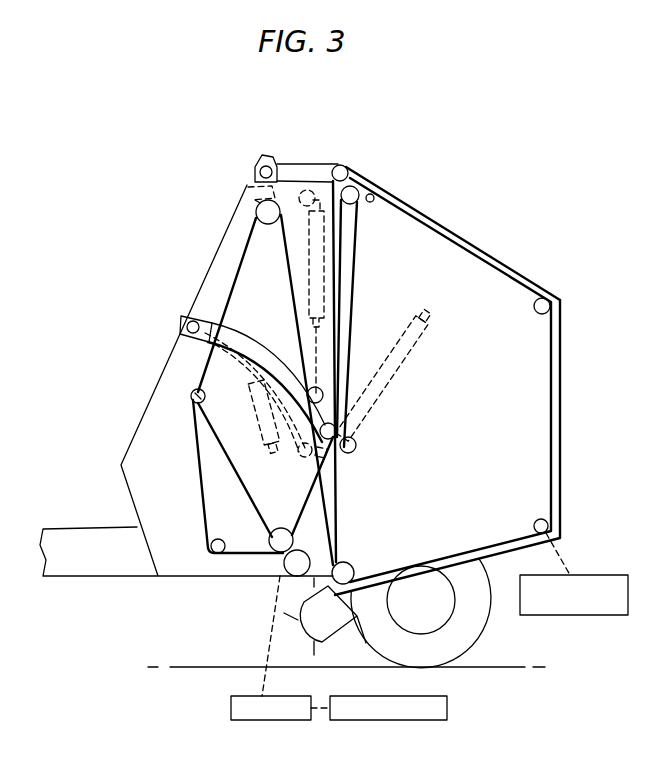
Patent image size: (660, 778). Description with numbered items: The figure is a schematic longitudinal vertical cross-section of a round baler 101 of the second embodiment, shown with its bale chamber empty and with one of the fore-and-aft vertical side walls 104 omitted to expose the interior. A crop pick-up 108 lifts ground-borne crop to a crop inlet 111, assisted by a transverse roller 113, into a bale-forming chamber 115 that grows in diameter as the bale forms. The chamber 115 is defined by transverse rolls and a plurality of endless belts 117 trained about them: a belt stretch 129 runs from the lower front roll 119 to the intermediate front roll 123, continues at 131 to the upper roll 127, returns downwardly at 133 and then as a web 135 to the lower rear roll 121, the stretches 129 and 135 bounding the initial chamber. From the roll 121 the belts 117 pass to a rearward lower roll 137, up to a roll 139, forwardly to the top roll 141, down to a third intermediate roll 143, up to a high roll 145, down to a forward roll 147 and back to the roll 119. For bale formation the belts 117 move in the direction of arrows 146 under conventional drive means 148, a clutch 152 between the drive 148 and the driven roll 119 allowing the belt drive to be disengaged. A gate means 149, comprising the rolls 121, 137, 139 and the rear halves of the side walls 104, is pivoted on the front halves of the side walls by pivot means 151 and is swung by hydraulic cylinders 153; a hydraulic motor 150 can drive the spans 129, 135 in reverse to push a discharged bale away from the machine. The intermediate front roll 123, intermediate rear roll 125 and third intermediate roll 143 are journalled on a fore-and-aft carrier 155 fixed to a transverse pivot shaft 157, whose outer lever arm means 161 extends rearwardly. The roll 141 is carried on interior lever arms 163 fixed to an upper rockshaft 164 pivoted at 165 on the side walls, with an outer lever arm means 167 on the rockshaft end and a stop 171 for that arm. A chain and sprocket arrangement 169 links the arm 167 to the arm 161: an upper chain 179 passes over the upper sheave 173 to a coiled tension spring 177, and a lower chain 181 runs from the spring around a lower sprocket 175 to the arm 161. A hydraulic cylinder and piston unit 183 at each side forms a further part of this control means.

The baler 101 is at (476, 197).
The side walls 104 is at (411, 205).
The crop pick-up 108 is at (298, 633).
The crop inlet 111 is at (275, 606).
The transverse roller 113 is at (292, 566).
The bale-forming chamber 115 is at (319, 480).
The endless belts 117 is at (482, 247).
The lower front roll 119 is at (270, 540).
The lower rear roll 121 is at (354, 572).
The intermediate front roll 123 is at (333, 448).
The intermediate rear roll 125 is at (350, 445).
The upper roll 127 is at (358, 203).
The belt stretch 129 is at (338, 550).
The belt stretch 131 is at (342, 285).
The belt stretch 133 is at (357, 245).
The web or stretch 135 is at (337, 507).
The rearward lower roll 137 is at (534, 526).
The roll 139 is at (535, 305).
The top roll 141 is at (348, 170).
The third intermediate roll 143 is at (316, 396).
The high roll 145 is at (263, 208).
The arrows 146 is at (298, 520).
The forward roll 147 is at (196, 404).
The drive means 148 is at (393, 720).
The gate means 149 is at (567, 392).
The hydraulic motor 150 is at (575, 615).
The pivot means 151 is at (372, 196).
The clutch 152 is at (243, 720).
The hydraulic cylinders 153 is at (387, 385).
The carrier 155 is at (240, 332).
The transverse pivot shaft 157 is at (187, 328).
The lever arm means 161 is at (186, 357).
The interior lever arms 163 is at (301, 160).
The upper rockshaft 164 is at (264, 166).
The pivot 165 is at (253, 167).
The outer lever arm means 167 is at (253, 182).
The chain and sprocket arrangement 169 is at (383, 264).
The stop 171 is at (247, 188).
The upper sheave 173 is at (318, 182).
The lower sprocket 175 is at (300, 455).
The coiled tension spring 177 is at (309, 262).
The upper chain 179 is at (287, 186).
The lower chain 181 is at (312, 334).
The hydraulic cylinder and piston unit 183 is at (262, 430).